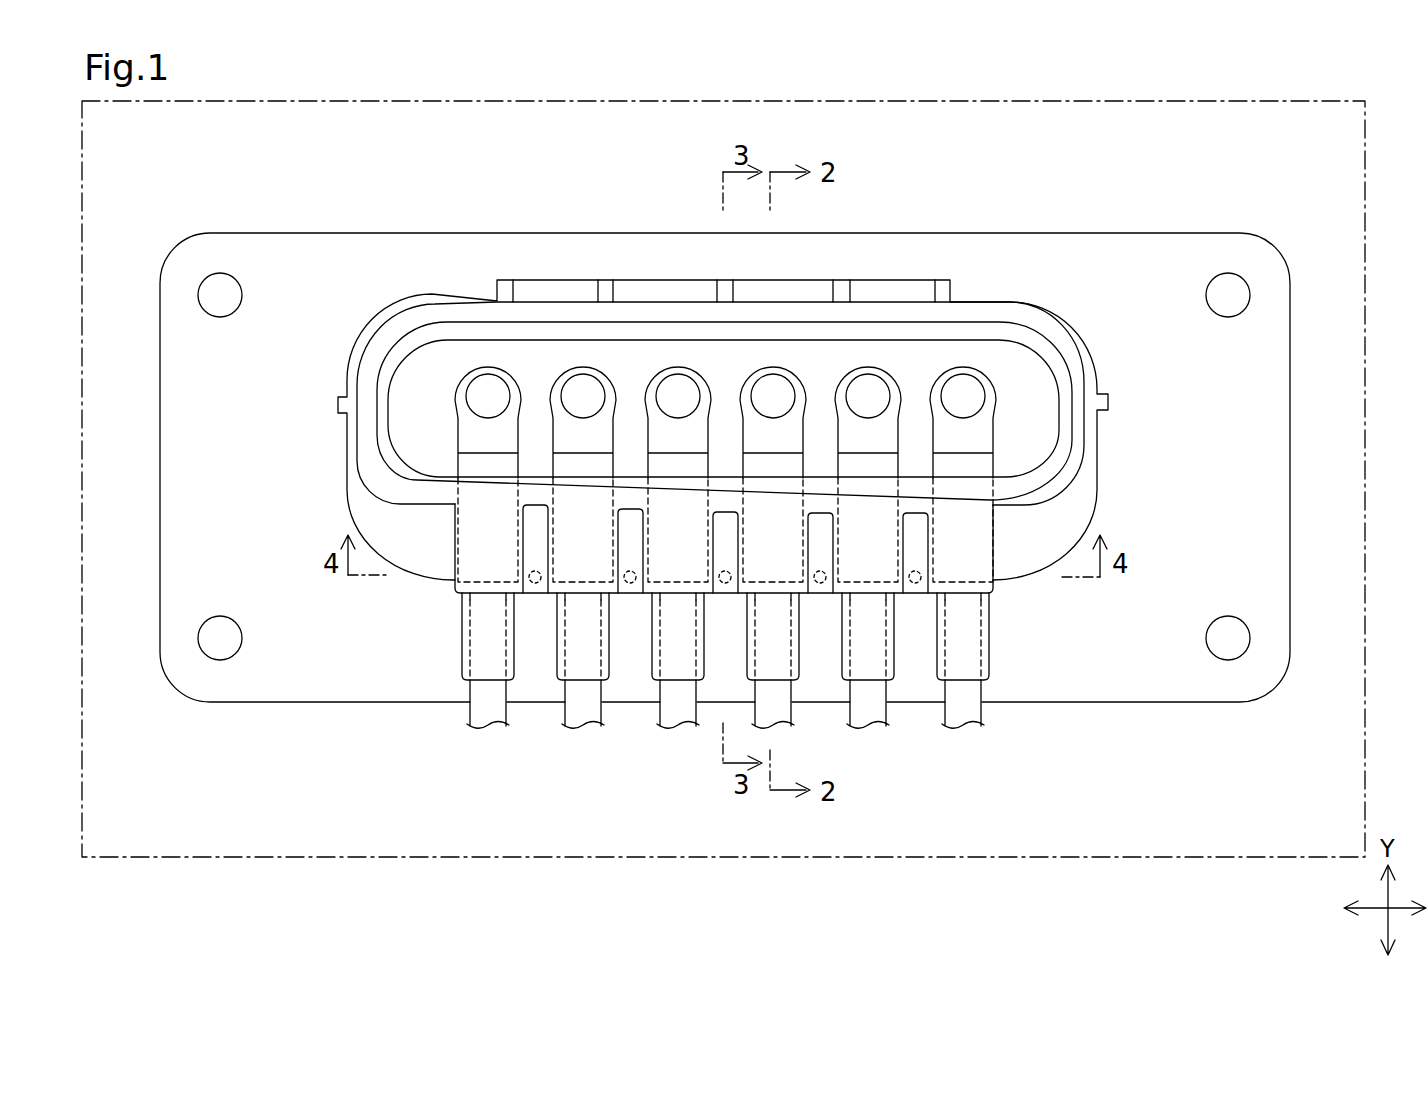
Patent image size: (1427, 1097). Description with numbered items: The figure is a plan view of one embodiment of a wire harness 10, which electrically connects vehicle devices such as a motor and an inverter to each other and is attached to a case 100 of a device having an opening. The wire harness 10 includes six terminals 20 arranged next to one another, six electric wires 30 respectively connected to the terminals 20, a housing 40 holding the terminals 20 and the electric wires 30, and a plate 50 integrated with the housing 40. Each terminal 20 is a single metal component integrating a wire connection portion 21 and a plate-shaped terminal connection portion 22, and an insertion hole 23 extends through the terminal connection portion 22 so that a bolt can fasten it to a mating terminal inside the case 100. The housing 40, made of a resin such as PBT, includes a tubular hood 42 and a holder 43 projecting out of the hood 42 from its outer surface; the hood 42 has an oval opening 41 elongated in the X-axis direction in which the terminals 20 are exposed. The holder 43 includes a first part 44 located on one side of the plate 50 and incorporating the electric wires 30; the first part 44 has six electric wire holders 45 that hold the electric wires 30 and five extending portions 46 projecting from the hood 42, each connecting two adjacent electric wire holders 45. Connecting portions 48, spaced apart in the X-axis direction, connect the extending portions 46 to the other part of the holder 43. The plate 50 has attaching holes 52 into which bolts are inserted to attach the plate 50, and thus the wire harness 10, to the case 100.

The case 100 is at (1246, 101).
The wire harness 10 is at (1168, 198).
The plate 50 is at (1067, 232).
The attaching hole 52 is at (220, 317).
The housing 40 is at (973, 296).
The opening 41 is at (1052, 352).
The hood 42 is at (1078, 428).
The terminal 20 is at (753, 470).
The terminal connection portion 22 is at (985, 406).
The insertion hole 23 is at (958, 390).
The wire connection portion 21 is at (990, 522).
The holder 43 is at (786, 580).
The first part 44 is at (820, 580).
The electric wire holder 45 is at (993, 586).
The extending portion 46 is at (917, 587).
The connecting portion 48 is at (912, 583).
The electric wire 30 is at (978, 712).